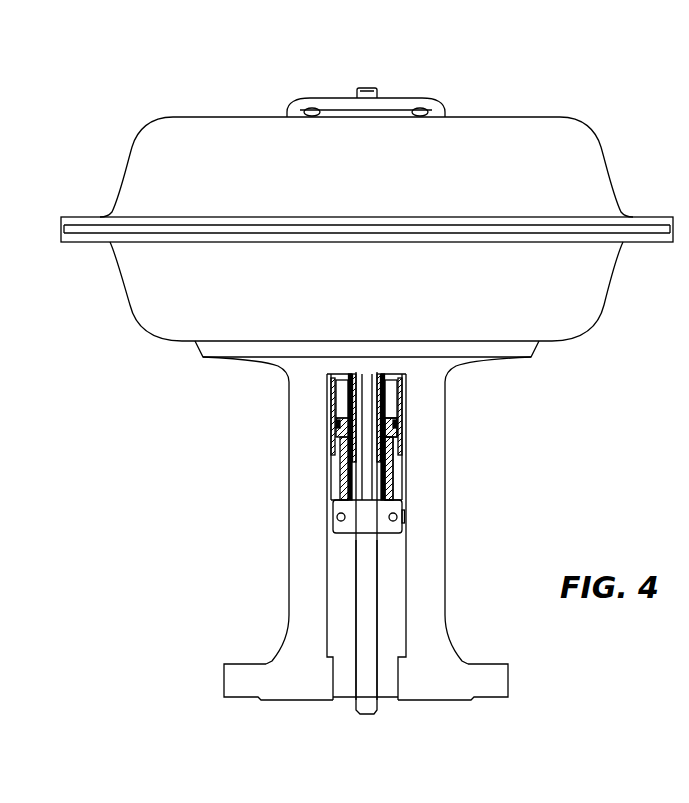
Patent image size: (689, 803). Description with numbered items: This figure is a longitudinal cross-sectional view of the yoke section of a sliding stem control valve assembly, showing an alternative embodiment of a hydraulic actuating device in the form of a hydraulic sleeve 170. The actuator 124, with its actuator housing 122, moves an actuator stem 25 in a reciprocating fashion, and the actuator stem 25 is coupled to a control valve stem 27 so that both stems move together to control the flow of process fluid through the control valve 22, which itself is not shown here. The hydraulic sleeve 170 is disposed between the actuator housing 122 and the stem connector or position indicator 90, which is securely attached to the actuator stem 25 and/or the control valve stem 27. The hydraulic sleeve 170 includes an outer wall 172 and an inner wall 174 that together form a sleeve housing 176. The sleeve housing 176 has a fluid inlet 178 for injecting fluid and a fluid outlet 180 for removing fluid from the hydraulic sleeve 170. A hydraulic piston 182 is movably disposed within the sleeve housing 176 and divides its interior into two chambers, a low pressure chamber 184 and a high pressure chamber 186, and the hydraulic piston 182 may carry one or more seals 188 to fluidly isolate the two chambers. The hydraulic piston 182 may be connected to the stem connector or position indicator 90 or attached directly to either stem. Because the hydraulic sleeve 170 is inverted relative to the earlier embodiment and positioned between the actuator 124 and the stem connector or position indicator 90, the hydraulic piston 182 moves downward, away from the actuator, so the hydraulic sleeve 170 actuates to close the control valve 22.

The actuator 124 is at (140, 110).
The actuator housing 122 is at (117, 267).
The control valve 22 is at (612, 281).
The sleeve housing 176 is at (334, 360).
The actuator stem 25 is at (362, 382).
The inner wall 174 is at (381, 380).
The outer wall 172 is at (406, 387).
The hydraulic sleeve 170 is at (388, 396).
The seals 188 is at (405, 423).
The fluid outlet 180 is at (405, 443).
The fluid inlet 178 is at (329, 390).
The high pressure chamber 186 is at (340, 405).
The low pressure chamber 184 is at (332, 443).
The hydraulic piston 182 is at (346, 475).
The stem connector or position indicator 90 is at (347, 527).
The control valve stem 27 is at (357, 598).